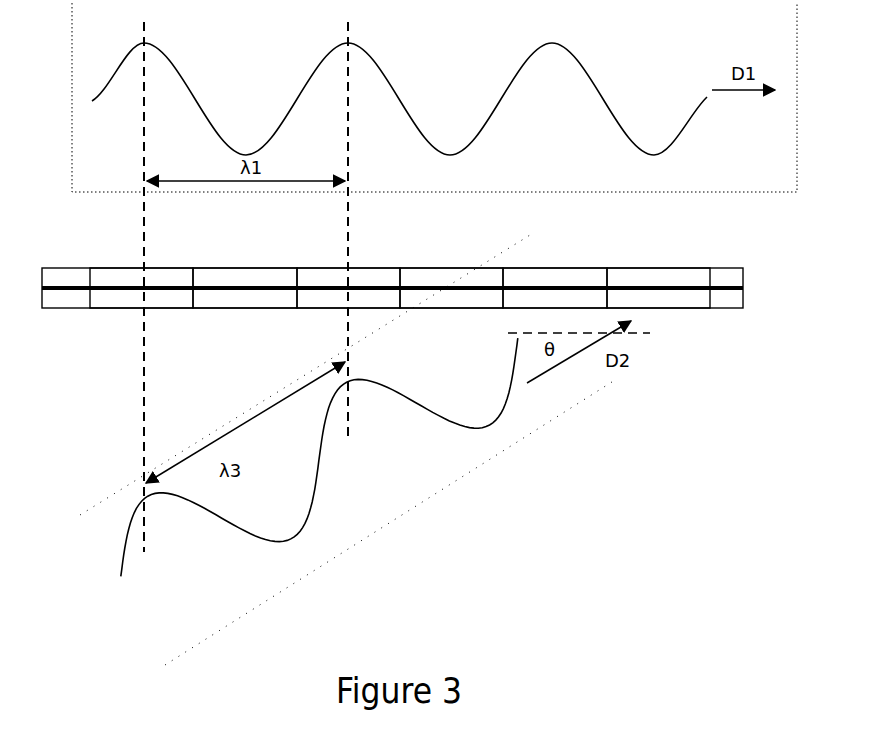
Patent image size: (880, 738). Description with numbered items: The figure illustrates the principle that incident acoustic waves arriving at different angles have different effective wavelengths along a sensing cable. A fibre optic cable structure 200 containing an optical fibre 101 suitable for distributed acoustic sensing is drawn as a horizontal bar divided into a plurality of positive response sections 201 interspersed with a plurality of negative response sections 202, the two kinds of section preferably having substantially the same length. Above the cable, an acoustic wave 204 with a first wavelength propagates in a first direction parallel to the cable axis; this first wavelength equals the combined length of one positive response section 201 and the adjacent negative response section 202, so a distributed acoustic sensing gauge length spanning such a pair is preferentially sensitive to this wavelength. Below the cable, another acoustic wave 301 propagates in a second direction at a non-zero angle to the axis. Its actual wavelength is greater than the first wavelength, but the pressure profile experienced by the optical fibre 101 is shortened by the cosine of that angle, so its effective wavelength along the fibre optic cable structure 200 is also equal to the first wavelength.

The fibre optic cable structure 200 is at (58, 268).
The positive-response longitudinal section 201 is at (130, 266).
The negative-response longitudinal section 202 is at (235, 266).
The optical fibre 101 is at (74, 292).
The acoustic wave 204 is at (602, 65).
The acoustic wave 301 is at (494, 422).